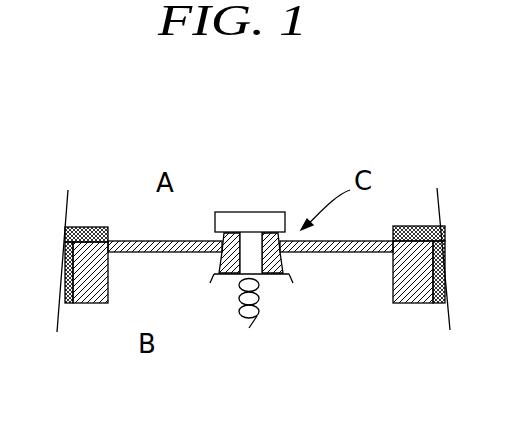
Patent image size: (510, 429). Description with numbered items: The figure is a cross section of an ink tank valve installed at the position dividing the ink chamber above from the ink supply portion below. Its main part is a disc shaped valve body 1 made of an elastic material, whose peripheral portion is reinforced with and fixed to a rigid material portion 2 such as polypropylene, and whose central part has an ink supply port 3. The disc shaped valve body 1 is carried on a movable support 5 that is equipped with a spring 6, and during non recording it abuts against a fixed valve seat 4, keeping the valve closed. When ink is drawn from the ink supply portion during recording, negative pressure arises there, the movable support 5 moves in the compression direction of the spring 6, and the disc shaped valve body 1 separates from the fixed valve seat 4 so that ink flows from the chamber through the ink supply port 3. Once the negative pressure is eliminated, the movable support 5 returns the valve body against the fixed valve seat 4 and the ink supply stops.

The disc shaped valve body 1 is at (148, 255).
The rigid material portion 2 is at (100, 228).
The ink supply port 3 is at (248, 252).
The fixed valve seat 4 is at (248, 210).
The movable support 5 is at (222, 276).
The spring 6 is at (250, 328).